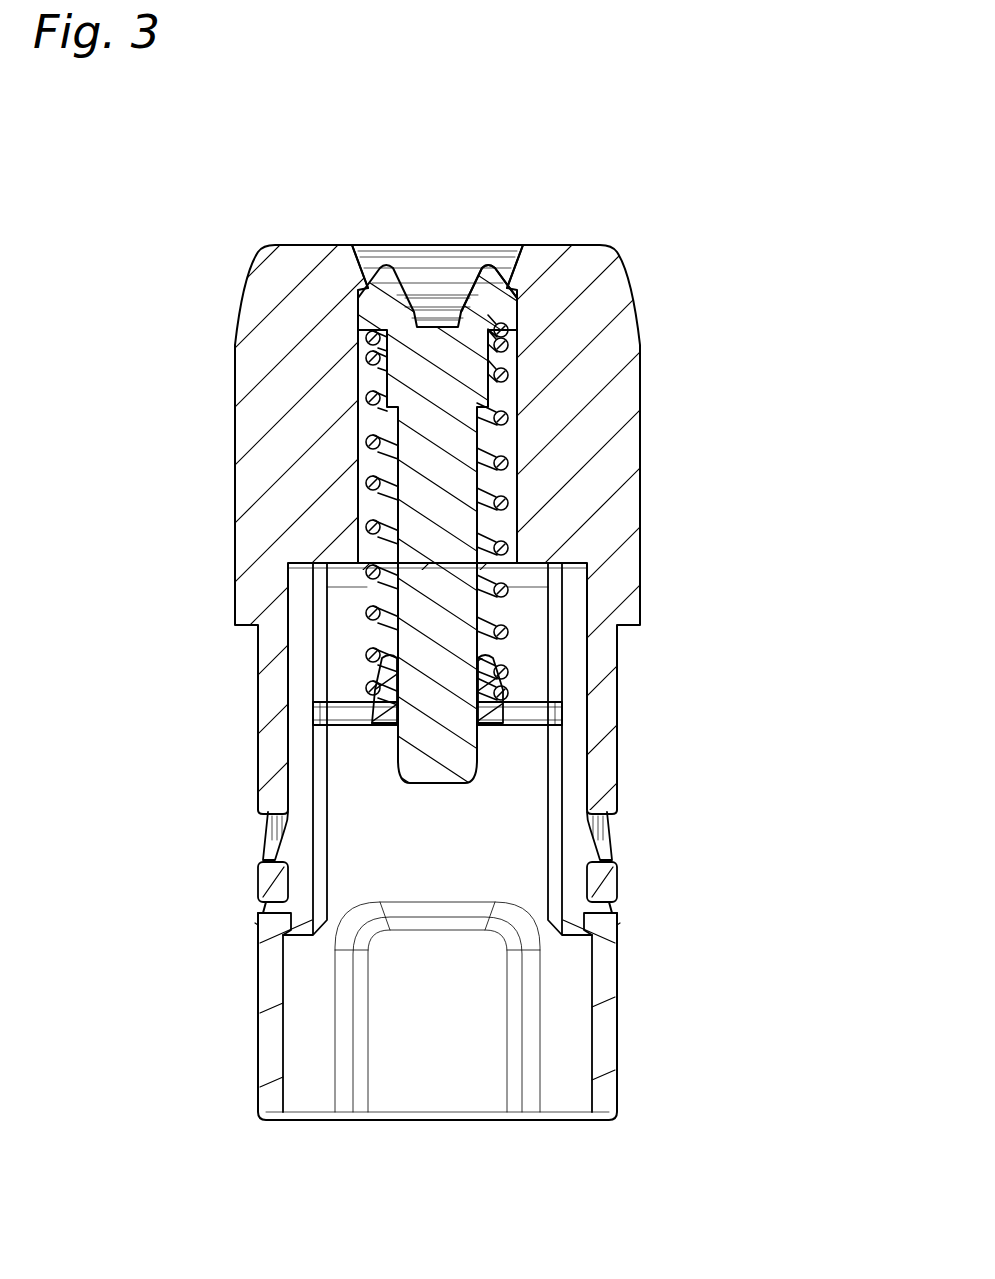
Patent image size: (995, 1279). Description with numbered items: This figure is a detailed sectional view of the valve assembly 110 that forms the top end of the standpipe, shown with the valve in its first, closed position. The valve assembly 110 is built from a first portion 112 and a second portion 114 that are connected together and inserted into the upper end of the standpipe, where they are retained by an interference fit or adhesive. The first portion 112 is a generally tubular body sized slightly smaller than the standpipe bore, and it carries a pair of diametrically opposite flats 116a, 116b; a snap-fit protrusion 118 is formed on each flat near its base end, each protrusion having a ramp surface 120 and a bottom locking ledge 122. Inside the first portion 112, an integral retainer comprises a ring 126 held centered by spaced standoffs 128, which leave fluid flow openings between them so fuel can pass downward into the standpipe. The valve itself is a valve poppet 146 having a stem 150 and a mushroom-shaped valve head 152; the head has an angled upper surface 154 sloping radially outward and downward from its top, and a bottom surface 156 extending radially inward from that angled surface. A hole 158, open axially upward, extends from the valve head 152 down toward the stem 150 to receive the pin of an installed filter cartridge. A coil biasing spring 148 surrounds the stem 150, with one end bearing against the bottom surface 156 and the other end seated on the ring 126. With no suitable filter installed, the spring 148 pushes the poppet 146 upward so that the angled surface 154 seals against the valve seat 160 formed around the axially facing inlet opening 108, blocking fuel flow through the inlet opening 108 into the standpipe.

The inlet opening 108 is at (395, 258).
The valve assembly 110 is at (497, 615).
The first portion 112 is at (627, 1018).
The second portion 114 is at (497, 544).
The flat 116a is at (338, 728).
The flat 116b is at (563, 700).
The snap-fit protrusion 118 is at (600, 840).
The ramp surface 120 is at (274, 858).
The bottom locking ledge 122 is at (265, 893).
The ring 126 is at (382, 727).
The standoff 128 is at (347, 727).
The valve poppet 146 is at (458, 392).
The biasing spring 148 is at (363, 492).
The stem 150 is at (538, 487).
The valve head 152 is at (485, 292).
The angled upper surface 154 is at (358, 292).
The bottom surface 156 is at (358, 292).
The hole 158 is at (442, 292).
The valve seat 160 is at (520, 292).